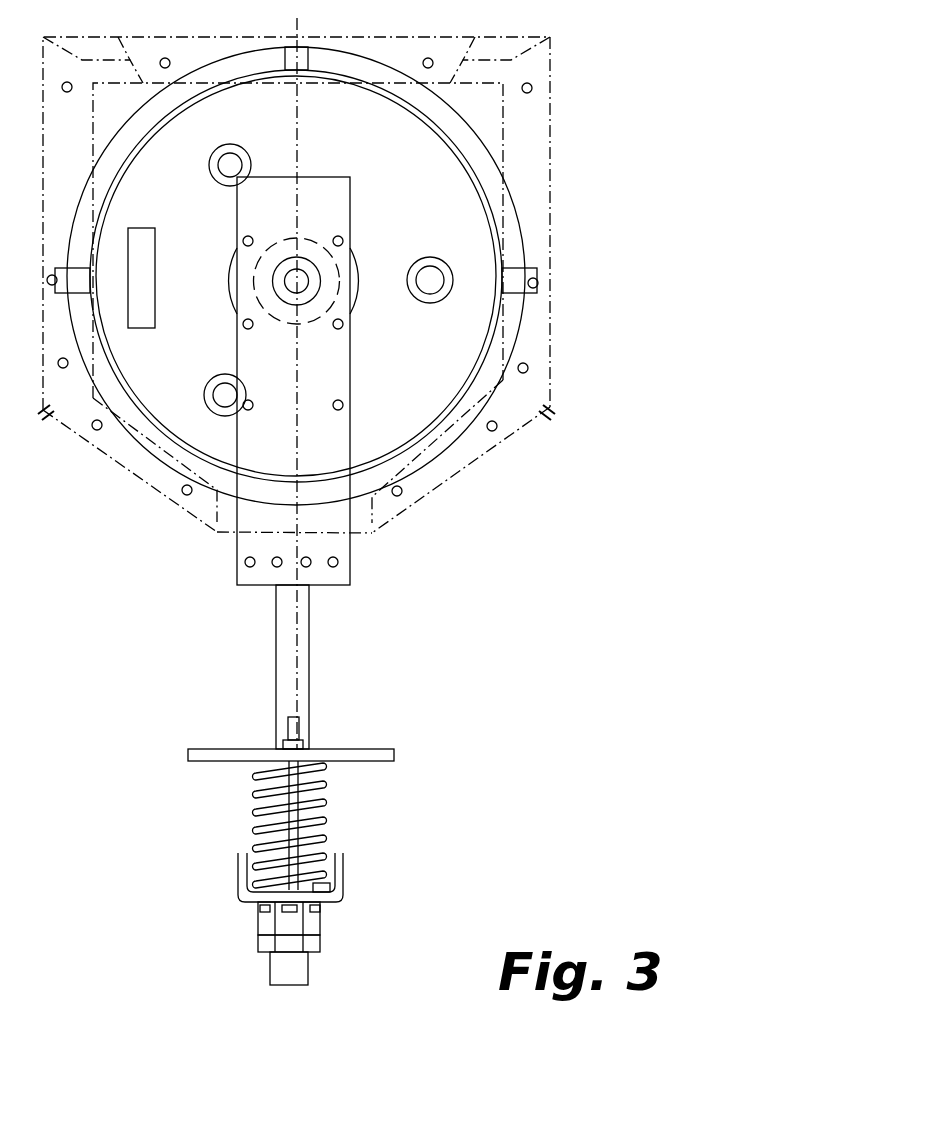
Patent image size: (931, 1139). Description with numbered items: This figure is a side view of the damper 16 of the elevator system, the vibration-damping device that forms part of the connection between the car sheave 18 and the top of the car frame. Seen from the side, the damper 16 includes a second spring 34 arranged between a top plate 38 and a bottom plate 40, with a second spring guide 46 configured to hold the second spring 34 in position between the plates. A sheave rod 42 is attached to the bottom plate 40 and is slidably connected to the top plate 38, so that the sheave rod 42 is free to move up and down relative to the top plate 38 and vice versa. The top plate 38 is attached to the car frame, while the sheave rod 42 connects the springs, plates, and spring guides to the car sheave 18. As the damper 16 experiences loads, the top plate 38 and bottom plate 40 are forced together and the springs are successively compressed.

The damper 16 is at (365, 785).
The car sheave 18 is at (477, 137).
The second spring 34 is at (260, 828).
The top plate 38 is at (395, 753).
The bottom plate 40 is at (343, 897).
The sheave rod 42 is at (277, 660).
The second spring guide 46 is at (302, 713).